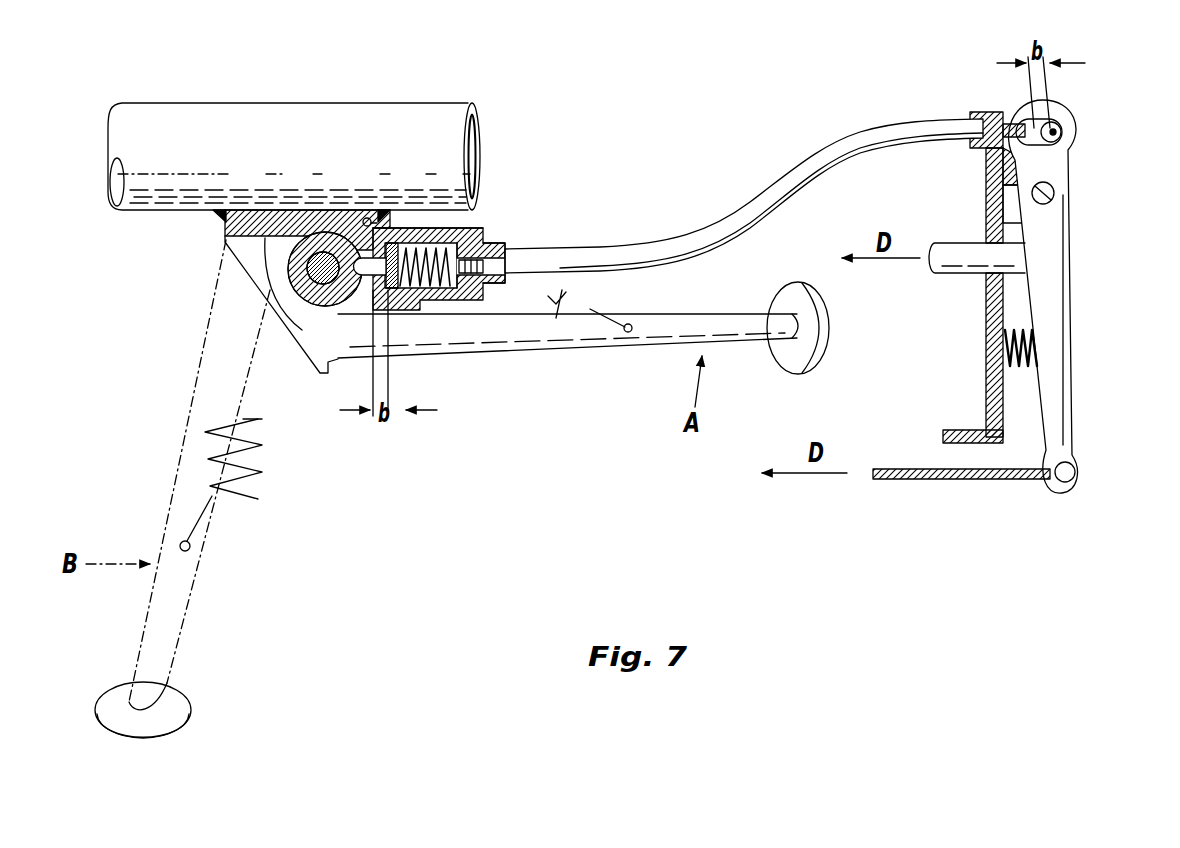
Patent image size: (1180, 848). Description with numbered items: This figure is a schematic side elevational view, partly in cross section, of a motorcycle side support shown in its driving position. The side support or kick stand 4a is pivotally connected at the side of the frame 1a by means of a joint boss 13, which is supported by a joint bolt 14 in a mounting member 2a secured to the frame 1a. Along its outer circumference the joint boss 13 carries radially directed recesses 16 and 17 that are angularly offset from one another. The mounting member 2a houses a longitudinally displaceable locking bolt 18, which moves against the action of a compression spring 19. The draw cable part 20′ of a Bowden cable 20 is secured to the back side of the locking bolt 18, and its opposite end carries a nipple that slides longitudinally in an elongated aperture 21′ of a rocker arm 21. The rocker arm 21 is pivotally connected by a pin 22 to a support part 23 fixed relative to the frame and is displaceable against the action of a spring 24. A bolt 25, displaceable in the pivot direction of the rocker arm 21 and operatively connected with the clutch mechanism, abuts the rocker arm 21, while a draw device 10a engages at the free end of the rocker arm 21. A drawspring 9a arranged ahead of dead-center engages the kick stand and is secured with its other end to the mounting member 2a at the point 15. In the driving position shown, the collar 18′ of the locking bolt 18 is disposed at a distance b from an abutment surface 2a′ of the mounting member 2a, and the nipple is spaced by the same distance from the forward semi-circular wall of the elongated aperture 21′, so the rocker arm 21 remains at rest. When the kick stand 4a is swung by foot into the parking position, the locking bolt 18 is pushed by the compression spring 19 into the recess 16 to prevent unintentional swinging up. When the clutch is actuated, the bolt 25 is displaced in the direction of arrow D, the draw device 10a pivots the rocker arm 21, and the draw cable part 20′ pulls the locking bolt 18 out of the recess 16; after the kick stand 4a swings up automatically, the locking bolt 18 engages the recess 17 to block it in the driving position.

The frame 1a is at (282, 128).
The mounting member 2a is at (253, 225).
The abutment surface 2a′ is at (392, 237).
The joint boss 13 is at (296, 263).
The joint bolt 14 is at (322, 269).
The drawspring attachment point 15 is at (367, 218).
The recess 16 is at (317, 240).
The recess 17 is at (297, 303).
The locking bolt 18 is at (357, 237).
The collar 18′ is at (400, 235).
The compression spring 19 is at (440, 303).
The Bowden cable 20 is at (713, 227).
The draw cable part 20′ is at (497, 252).
The rocker arm 21 is at (1052, 270).
The elongated aperture 21′ is at (1000, 160).
The pin 22 is at (1010, 223).
The support part 23 is at (1000, 390).
The spring 24 is at (1017, 370).
The bolt 25 is at (964, 262).
The side support or kick stand 4a is at (560, 337).
The drawspring 9a is at (586, 305).
The draw device 10a is at (948, 470).